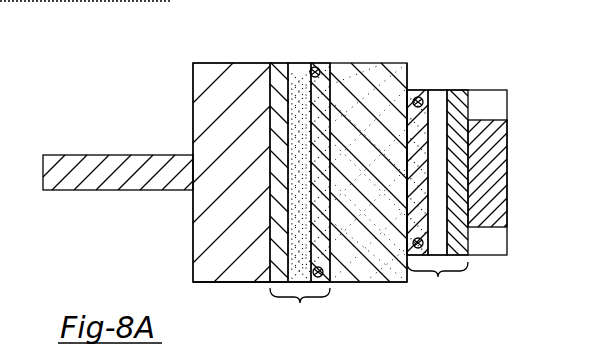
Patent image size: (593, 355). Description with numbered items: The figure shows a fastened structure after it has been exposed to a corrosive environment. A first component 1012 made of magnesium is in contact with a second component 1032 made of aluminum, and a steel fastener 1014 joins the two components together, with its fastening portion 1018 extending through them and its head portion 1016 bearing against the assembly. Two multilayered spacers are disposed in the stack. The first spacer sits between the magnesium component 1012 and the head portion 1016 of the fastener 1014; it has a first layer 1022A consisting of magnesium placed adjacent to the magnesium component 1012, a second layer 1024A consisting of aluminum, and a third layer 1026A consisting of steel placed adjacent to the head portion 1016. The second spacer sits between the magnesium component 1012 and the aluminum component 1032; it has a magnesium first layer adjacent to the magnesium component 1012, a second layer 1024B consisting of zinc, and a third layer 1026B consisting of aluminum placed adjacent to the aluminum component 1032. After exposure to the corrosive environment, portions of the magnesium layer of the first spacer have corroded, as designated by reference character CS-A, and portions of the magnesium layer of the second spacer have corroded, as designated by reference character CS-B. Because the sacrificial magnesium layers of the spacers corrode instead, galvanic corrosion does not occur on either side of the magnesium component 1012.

The first component 1012 is at (138, 1).
The second component 1032 is at (193, 78).
The fastening portion 1018 is at (85, 188).
The third layer 1026B is at (280, 183).
The second layer 1024B is at (298, 154).
The first layer 1022A is at (420, 122).
The second layer 1024A is at (436, 155).
The third layer 1026A is at (455, 245).
The head portion 1016 is at (497, 173).
The fastener 1014 is at (518, 195).
The corrosion of the spacer magnesium layer CS-B is at (316, 66).
The corrosion of the spacer magnesium layer CS-A is at (413, 102).